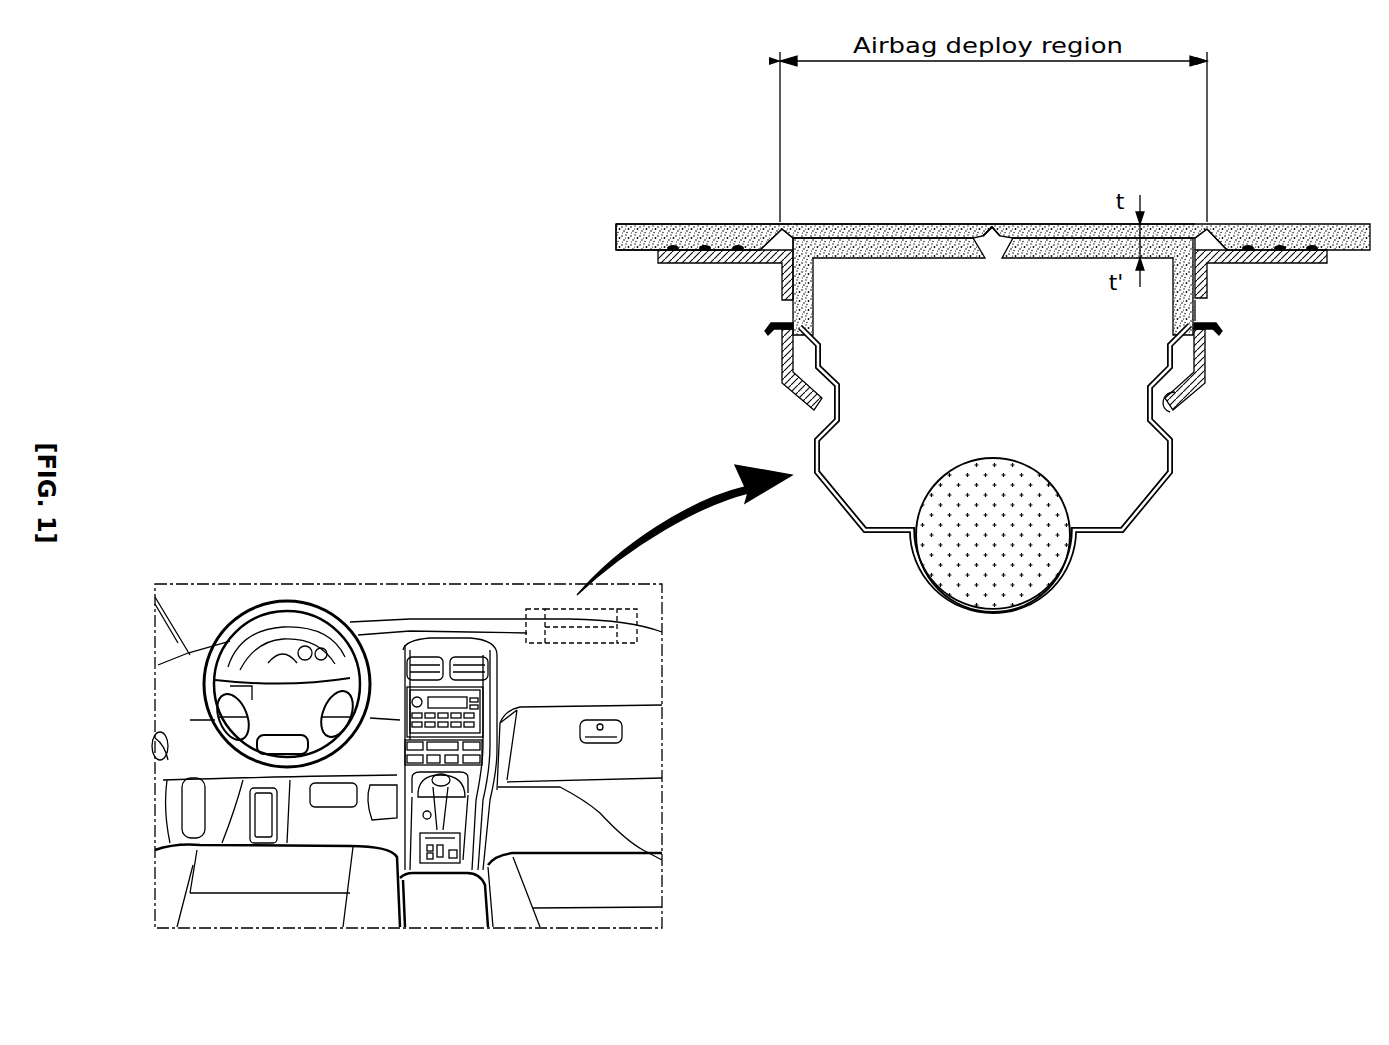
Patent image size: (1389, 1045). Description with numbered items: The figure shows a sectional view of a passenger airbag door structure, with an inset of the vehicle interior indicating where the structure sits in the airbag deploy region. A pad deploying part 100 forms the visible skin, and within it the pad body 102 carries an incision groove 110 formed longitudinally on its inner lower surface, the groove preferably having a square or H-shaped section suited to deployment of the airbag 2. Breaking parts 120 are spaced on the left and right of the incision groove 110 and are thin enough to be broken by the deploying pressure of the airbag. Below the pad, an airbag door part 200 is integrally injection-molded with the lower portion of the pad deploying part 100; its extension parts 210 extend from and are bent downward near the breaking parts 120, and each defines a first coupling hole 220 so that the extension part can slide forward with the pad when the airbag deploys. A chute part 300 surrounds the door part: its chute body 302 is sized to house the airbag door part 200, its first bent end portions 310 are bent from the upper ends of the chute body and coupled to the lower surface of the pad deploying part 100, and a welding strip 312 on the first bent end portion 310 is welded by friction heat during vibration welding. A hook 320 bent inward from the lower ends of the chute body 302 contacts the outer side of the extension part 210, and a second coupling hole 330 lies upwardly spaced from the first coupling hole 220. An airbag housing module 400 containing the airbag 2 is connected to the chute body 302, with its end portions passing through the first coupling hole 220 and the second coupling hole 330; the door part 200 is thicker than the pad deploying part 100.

The pad deploying part 100 is at (815, 131).
The incision groove 110 is at (977, 225).
The breaking parts 120 is at (800, 225).
The pad body 102 is at (1013, 225).
The airbag door part 200 is at (723, 319).
The extension parts 210 is at (792, 308).
The first coupling hole 220 is at (800, 347).
The chute part 300 is at (1273, 347).
The chute body 302 is at (1210, 362).
The first bent end portions 310 is at (1230, 265).
The welding strip 312 is at (1247, 253).
The hook 320 is at (1163, 397).
The second coupling hole 330 is at (1254, 326).
The airbag housing module 400 is at (1162, 505).
The airbag 2 is at (1035, 568).